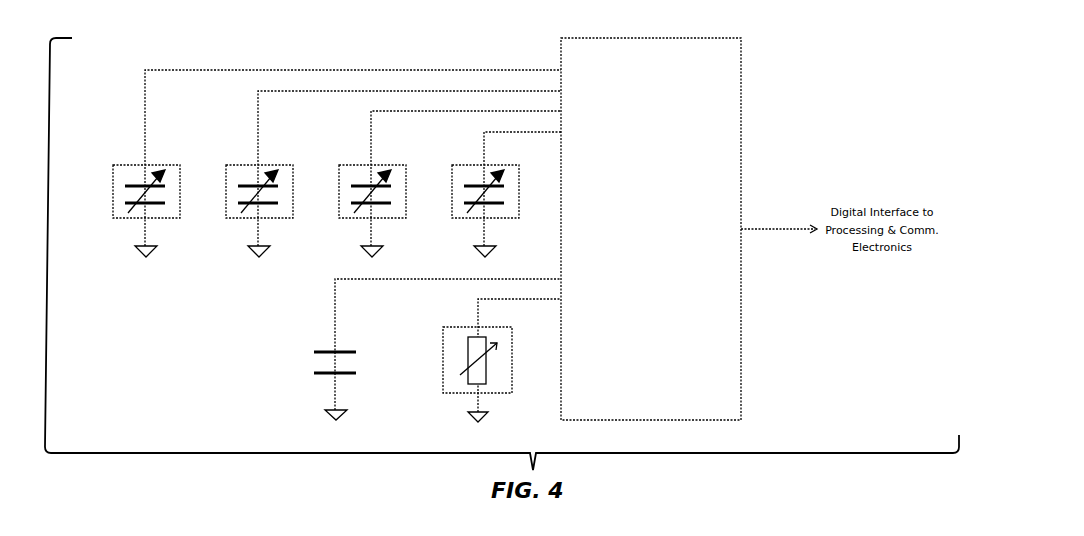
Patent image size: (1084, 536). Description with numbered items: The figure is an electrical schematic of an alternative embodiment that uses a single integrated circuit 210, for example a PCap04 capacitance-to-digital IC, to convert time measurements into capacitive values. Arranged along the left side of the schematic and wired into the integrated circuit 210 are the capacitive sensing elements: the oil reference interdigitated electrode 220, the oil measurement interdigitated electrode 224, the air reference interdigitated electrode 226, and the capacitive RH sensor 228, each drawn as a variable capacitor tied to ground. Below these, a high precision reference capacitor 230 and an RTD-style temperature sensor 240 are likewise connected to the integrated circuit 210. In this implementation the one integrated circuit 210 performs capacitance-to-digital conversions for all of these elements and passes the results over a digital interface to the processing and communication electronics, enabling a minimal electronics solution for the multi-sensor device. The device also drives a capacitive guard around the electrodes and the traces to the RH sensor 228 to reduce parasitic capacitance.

The integrated circuit 210 is at (651, 229).
The oil reference interdigitated electrode 220 is at (113, 165).
The oil measurement interdigitated electrode 224 is at (226, 165).
The air reference interdigitated electrode 226 is at (339, 165).
The capacitive RH sensor 228 is at (452, 165).
The reference capacitor 230 is at (325, 343).
The RTD-style temperature sensor 240 is at (443, 327).